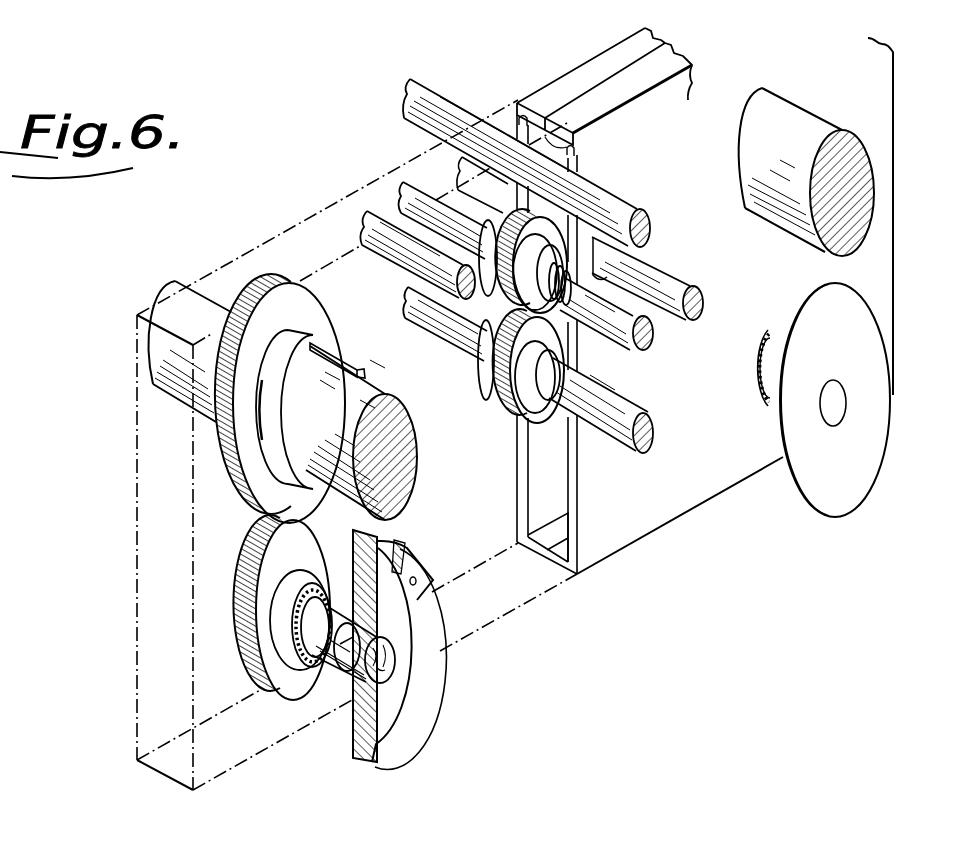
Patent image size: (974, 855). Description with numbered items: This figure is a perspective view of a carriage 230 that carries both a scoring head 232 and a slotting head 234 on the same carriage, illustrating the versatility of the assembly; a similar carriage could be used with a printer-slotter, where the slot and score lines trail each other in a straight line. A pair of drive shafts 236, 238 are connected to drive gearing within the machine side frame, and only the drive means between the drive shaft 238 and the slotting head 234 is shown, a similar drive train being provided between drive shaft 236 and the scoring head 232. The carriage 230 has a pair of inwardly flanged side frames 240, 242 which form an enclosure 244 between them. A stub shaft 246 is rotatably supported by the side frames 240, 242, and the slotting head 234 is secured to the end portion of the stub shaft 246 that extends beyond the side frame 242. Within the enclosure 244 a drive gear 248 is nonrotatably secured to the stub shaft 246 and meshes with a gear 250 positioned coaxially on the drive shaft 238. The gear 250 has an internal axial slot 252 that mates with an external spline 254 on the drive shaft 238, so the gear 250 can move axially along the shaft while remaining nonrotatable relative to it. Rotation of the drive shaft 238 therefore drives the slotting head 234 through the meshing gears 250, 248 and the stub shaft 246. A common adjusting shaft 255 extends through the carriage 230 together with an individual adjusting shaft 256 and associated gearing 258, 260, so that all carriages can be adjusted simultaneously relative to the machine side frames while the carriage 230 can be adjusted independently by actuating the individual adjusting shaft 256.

The carriage 230 is at (263, 234).
The scoring head 232 is at (867, 462).
The slotting head 234 is at (423, 712).
The drive shaft 236 is at (798, 232).
The drive shaft 238 is at (405, 450).
The side frame 240 is at (547, 87).
The side frame 242 is at (592, 113).
The enclosure 244 is at (574, 152).
The stub shaft 246 is at (357, 657).
The drive gear 248 is at (262, 664).
The gear 250 is at (263, 490).
The internal axial slot 252 is at (312, 358).
The external spline 254 is at (353, 396).
The common adjusting shaft 255 is at (656, 334).
The individual adjusting shaft 256 is at (660, 425).
The gearing 258 is at (484, 305).
The gearing 260 is at (493, 406).